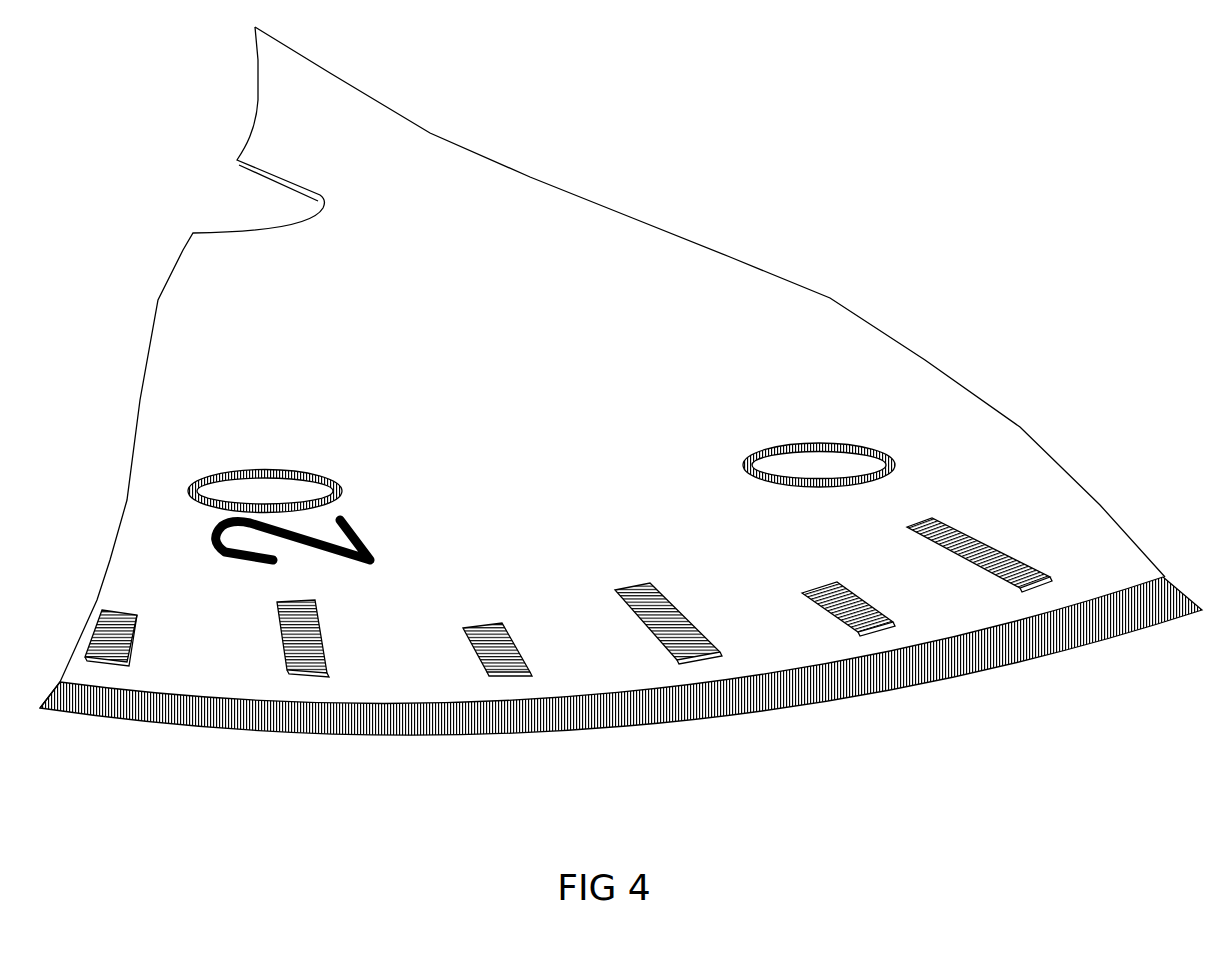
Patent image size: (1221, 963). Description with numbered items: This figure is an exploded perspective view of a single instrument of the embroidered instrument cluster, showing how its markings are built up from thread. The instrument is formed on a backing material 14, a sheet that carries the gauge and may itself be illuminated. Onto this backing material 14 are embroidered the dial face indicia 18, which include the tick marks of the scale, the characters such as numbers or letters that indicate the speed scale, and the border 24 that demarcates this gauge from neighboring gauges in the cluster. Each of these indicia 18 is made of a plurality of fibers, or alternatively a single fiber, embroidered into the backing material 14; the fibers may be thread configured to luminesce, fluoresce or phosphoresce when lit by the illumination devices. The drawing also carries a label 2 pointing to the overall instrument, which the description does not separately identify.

The turbine blade 2 is at (602, 367).
The backing material 14 is at (400, 299).
The dial face indicia 18 is at (337, 472).
The border 24 is at (621, 693).